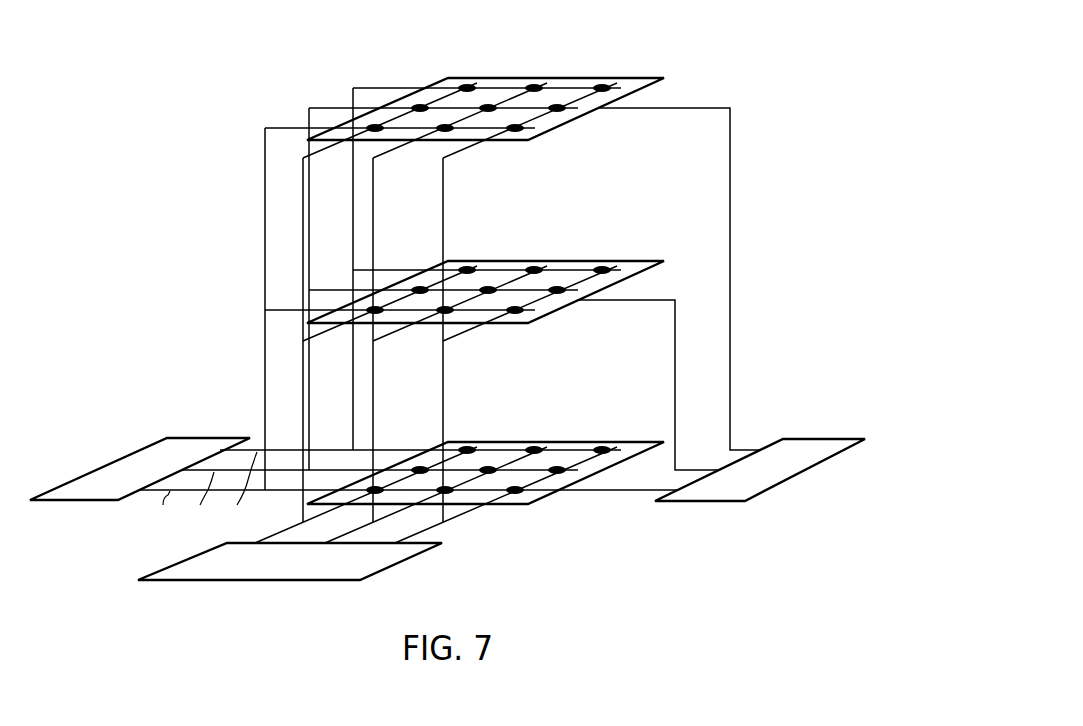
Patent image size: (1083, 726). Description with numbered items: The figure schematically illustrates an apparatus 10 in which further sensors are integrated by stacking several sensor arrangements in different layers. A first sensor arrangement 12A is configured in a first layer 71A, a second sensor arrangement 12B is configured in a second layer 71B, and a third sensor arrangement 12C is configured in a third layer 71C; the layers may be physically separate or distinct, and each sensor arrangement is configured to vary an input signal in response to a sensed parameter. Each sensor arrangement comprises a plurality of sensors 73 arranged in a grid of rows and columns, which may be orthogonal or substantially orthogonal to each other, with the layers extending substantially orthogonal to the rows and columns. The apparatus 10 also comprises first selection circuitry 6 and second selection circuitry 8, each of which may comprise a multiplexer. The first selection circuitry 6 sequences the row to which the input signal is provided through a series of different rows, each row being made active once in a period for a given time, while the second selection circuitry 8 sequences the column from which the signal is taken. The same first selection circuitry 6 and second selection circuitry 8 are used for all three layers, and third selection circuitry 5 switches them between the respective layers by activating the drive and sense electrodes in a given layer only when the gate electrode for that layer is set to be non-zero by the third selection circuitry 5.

The apparatus 10 is at (447, 329).
The first sensor arrangement 12A is at (499, 107).
The second sensor arrangement 12B is at (482, 269).
The third sensor arrangement 12C is at (408, 483).
The first layer 71A is at (574, 118).
The second layer 71B is at (595, 258).
The third layer 71C is at (573, 523).
The sensors 73 is at (515, 131).
The third selection circuitry 5 is at (830, 438).
The first selection circuitry 6 is at (78, 502).
The second selection circuitry 8 is at (399, 563).